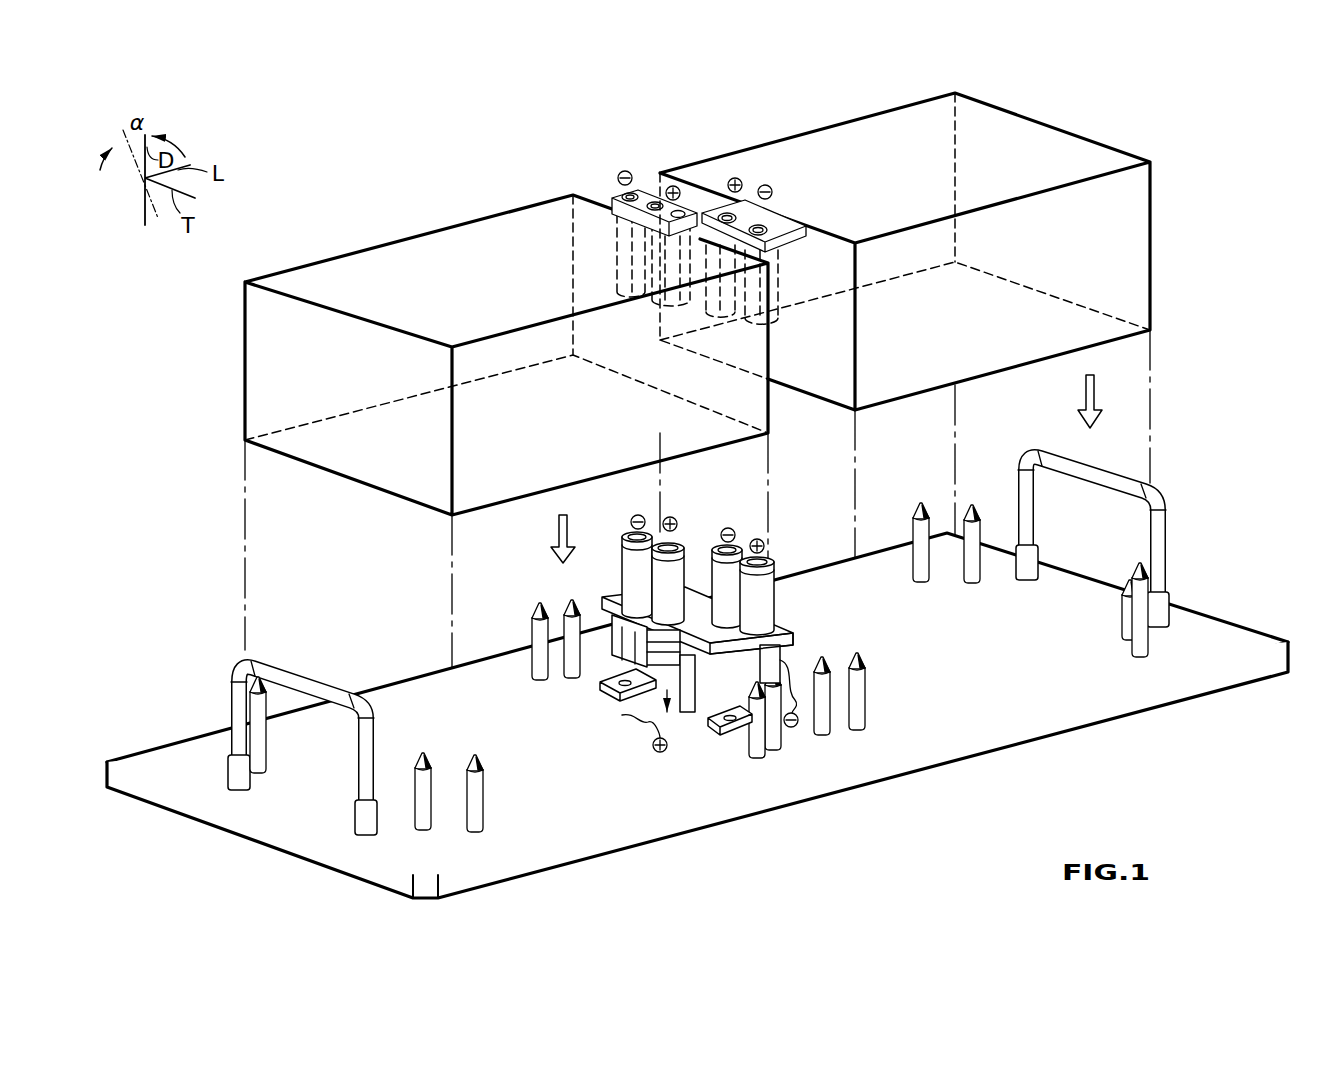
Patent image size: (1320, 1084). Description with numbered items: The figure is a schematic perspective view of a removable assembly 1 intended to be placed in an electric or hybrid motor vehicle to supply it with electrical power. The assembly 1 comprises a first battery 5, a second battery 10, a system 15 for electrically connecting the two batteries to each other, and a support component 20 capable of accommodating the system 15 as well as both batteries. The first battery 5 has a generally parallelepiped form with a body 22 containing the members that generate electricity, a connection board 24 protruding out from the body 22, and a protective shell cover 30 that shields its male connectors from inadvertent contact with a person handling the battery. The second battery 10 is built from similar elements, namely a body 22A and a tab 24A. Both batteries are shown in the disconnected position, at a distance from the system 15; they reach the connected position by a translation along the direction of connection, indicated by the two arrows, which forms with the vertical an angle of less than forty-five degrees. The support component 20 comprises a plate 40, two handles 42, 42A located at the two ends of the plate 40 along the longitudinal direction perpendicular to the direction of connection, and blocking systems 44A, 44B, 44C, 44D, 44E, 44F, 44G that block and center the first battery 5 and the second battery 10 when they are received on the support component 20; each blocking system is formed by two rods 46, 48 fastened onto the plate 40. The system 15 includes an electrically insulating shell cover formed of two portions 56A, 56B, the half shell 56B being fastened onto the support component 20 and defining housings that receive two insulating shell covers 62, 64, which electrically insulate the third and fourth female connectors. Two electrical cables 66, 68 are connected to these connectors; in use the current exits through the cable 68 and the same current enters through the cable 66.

The assembly 1 is at (1197, 197).
The first battery 5 is at (338, 248).
The second battery 10 is at (793, 132).
The system for electrically connecting 15 is at (742, 516).
The support component 20 is at (1232, 612).
The body 22 is at (506, 355).
The body 22A is at (905, 251).
The connection board 24 is at (648, 190).
The tab 24A is at (778, 228).
The protective shell cover 30 is at (613, 257).
The plate 40 is at (697, 704).
The handle 42 is at (243, 668).
The handle 42A is at (1087, 475).
The blocking system 44A is at (475, 822).
The blocking system 44B is at (257, 743).
The blocking system 44C is at (968, 513).
The blocking system 44D is at (1140, 587).
The blocking system 44E is at (857, 715).
The blocking system 44F is at (775, 732).
The blocking system 44G is at (536, 640).
The rod 46 is at (478, 802).
The rod 48 is at (420, 782).
The half shell 56A is at (786, 609).
The half shell 56B is at (798, 657).
The insulating shell cover 62 is at (760, 595).
The insulating shell cover 64 is at (675, 580).
The electrical cable 66 is at (797, 726).
The electrical cable 68 is at (640, 721).